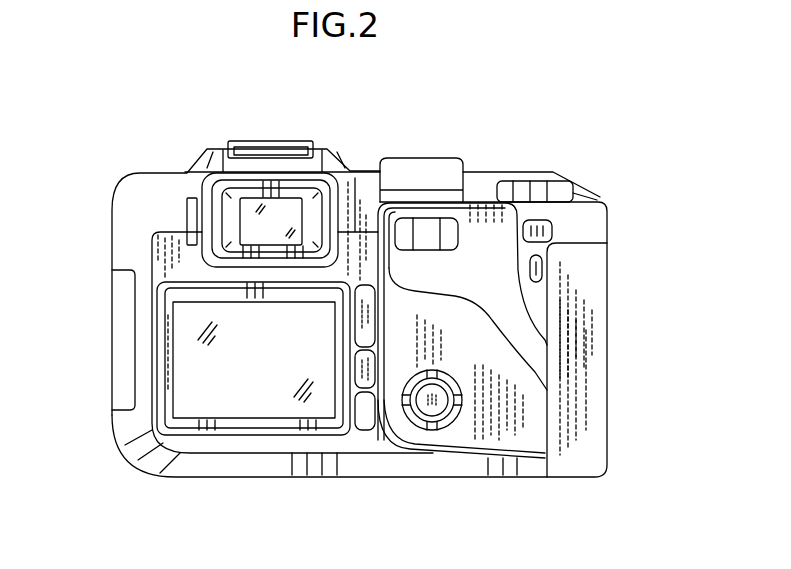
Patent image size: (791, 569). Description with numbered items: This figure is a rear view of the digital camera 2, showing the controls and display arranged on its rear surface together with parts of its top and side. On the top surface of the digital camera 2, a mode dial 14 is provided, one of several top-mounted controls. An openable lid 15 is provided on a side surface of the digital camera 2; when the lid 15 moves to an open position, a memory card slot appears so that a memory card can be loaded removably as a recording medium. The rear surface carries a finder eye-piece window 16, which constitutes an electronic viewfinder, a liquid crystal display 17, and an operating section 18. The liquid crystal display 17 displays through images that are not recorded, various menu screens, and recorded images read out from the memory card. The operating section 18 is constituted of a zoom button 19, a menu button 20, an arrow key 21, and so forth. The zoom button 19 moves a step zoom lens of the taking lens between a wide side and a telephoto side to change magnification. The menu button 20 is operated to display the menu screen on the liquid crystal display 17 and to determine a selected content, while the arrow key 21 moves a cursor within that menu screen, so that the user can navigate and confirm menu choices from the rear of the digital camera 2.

The digital camera 2 is at (182, 128).
The mode dial 14 is at (423, 173).
The openable lid 15 is at (120, 338).
The finder eye-piece window 16 is at (252, 217).
The liquid crystal display 17 is at (257, 408).
The operating section 18 is at (508, 349).
The zoom button 19 is at (423, 235).
The menu button 20 is at (364, 413).
The arrow key 21 is at (433, 423).